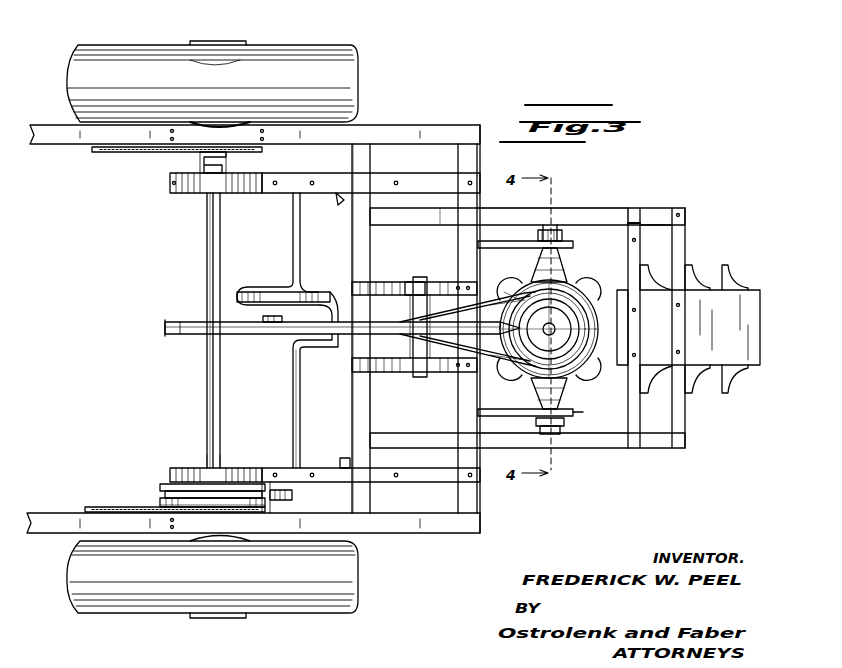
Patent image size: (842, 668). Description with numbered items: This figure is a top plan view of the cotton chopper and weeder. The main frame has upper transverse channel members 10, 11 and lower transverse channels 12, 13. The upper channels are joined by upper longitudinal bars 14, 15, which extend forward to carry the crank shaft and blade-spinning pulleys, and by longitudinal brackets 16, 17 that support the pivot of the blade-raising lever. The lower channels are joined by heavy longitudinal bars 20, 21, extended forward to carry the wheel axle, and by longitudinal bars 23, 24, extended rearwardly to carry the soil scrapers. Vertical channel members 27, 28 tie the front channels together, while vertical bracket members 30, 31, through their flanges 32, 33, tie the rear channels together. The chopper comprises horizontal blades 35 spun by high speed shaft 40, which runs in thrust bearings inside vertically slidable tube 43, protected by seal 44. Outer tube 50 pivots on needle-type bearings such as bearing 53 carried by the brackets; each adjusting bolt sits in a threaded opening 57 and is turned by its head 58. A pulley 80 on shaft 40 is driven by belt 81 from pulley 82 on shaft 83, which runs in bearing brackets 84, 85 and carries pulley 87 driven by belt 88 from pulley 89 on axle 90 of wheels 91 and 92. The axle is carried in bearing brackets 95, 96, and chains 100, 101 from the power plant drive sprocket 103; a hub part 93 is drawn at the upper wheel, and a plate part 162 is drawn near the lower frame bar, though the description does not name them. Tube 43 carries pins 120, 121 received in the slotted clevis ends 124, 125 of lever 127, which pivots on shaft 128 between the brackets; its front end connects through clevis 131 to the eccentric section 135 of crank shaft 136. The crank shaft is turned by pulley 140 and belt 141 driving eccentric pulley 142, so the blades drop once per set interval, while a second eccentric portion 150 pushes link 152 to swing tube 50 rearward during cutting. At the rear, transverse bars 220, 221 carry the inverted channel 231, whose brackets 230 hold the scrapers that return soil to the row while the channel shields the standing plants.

The upper channel member 10 is at (475, 248).
The upper channel member 11 is at (363, 250).
The lower transverse channel 12 is at (470, 160).
The lower transverse channel 13 is at (365, 158).
The upper longitudinal bar 14 is at (385, 477).
The upper longitudinal bar 15 is at (322, 182).
The longitudinal bracket 16 is at (383, 402).
The longitudinal bracket 17 is at (444, 282).
The longitudinal horizontal bar 20 is at (395, 524).
The longitudinal horizontal bar 21 is at (400, 140).
The longitudinal bar 23 is at (386, 448).
The longitudinal bar 24 is at (588, 218).
The vertical channel member 27 is at (342, 460).
The vertical channel member 28 is at (340, 196).
The vertical bracket member 30 is at (589, 411).
The vertical bracket member 31 is at (566, 245).
The flange 32 is at (480, 405).
The flange 33 is at (455, 216).
The blade 35 is at (506, 288).
The shaft 40 is at (586, 292).
The vertically slidable tube 43 is at (582, 311).
The seal 44 is at (590, 356).
The tube 50 is at (526, 373).
The needle-type bearing 53 is at (560, 238).
The threaded opening 57 is at (562, 425).
The head 58 is at (550, 432).
The pulley 80 is at (540, 275).
The belt 81 is at (165, 330).
The pulley 82 is at (176, 336).
The shaft 83 is at (210, 268).
The bearing bracket 84 is at (200, 468).
The bearing bracket 85 is at (186, 196).
The pulley 87 is at (222, 462).
The belt 88 is at (160, 508).
The pulley 89 is at (160, 500).
The axle 90 is at (182, 546).
The wheel 91 is at (122, 608).
The wheel 92 is at (288, 58).
The wheel hub 93 is at (244, 130).
The bearing bracket 95 is at (186, 522).
The bearing bracket 96 is at (188, 136).
The chain 100 is at (100, 506).
The chain 101 is at (138, 153).
The sprocket 103 is at (250, 154).
The pin 120 is at (535, 412).
The pin 121 is at (534, 243).
The bifurcated clevis end 124 is at (560, 382).
The bifurcated clevis end 125 is at (584, 285).
The lever 127 is at (500, 368).
The shaft 128 is at (418, 306).
The clevis 131 is at (262, 322).
The eccentric section 135 is at (305, 345).
The crank shaft 136 is at (298, 426).
The pulley 140 is at (236, 468).
The belt 141 is at (170, 484).
The pulley 142 is at (296, 500).
The eccentric portion 150 is at (272, 292).
The link 152 is at (326, 298).
The plate 162 is at (276, 508).
The transverse bar 220 is at (634, 215).
The transverse bar 221 is at (680, 244).
The bracket 230 is at (730, 288).
The inverted trough or channel 231 is at (750, 370).